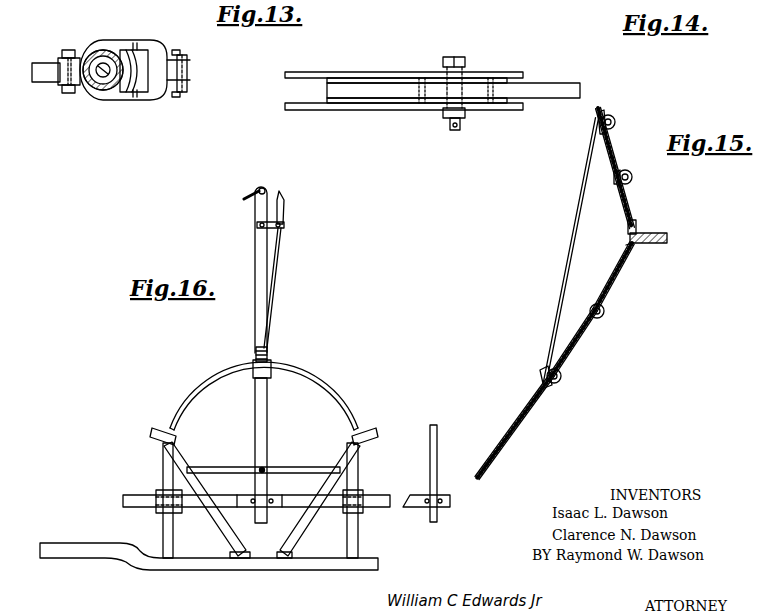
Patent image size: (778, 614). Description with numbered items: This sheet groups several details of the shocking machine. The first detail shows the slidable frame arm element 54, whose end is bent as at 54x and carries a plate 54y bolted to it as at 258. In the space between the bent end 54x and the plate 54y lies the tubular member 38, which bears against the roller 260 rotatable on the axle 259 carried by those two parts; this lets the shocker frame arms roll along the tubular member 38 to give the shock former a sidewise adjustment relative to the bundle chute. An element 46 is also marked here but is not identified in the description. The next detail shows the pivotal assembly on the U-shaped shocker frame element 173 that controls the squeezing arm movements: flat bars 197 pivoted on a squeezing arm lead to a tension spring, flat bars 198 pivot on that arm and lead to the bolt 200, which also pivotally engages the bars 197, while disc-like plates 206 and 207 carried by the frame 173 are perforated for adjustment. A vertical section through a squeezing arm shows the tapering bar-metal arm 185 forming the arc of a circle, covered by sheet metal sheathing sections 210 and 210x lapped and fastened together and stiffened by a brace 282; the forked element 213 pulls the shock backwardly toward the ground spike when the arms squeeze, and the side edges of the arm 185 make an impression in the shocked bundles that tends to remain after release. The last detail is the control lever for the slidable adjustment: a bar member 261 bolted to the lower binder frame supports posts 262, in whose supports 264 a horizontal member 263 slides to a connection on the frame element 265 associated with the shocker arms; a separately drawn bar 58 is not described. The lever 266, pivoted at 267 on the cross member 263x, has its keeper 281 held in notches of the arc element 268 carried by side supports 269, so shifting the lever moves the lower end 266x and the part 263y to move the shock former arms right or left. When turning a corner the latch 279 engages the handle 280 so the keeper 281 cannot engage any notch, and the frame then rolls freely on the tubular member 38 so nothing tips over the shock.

In FIG. 13, the tubular member 38 is at (92, 96).
In FIG. 13, the pivot pin 46 is at (103, 62).
In FIG. 13, the slidable frame arm element 54 is at (45, 82).
In FIG. 13, the bent end 54x is at (170, 97).
In FIG. 13, the plate 54y is at (150, 42).
In FIG. 13, the bolt 258 is at (189, 57).
In FIG. 13, the axle 259 is at (140, 102).
In FIG. 13, the roller 260 is at (130, 90).
In FIG. 14, the U-shaped shocker frame element 173 is at (567, 83).
In FIG. 14, the flat bars 197 is at (375, 72).
In FIG. 14, the flat bars 198 is at (443, 64).
In FIG. 14, the bolt 200 is at (456, 57).
In FIG. 14, the disc-like plate 206 is at (477, 78).
In FIG. 14, the disc-like plate 207 is at (412, 100).
In FIG. 15, the arm 185 is at (668, 237).
In FIG. 15, the sheathing section 210 is at (516, 425).
In FIG. 15, the sheathing section 210x is at (631, 207).
In FIG. 15, the forked element 213 is at (615, 120).
In FIG. 15, the brace 282 is at (571, 280).
In FIG. 16, the bar 58 is at (437, 434).
In FIG. 16, the bar member 261 is at (208, 572).
In FIG. 16, the posts 262 is at (163, 528).
In FIG. 16, the horizontal member 263 is at (291, 503).
In FIG. 16, the cross member 263x is at (243, 467).
In FIG. 16, the part 263y is at (253, 506).
In FIG. 16, the supports 264 is at (160, 492).
In FIG. 16, the frame element 265 is at (440, 495).
In FIG. 16, the lever 266 is at (256, 309).
In FIG. 16, the lower end 266x is at (272, 492).
In FIG. 16, the pivot 267 is at (270, 468).
In FIG. 16, the arc element 268 is at (302, 370).
In FIG. 16, the side supports 269 is at (187, 466).
In FIG. 16, the latch 279 is at (250, 194).
In FIG. 16, the handle 280 is at (285, 206).
In FIG. 16, the keeper 281 is at (268, 357).